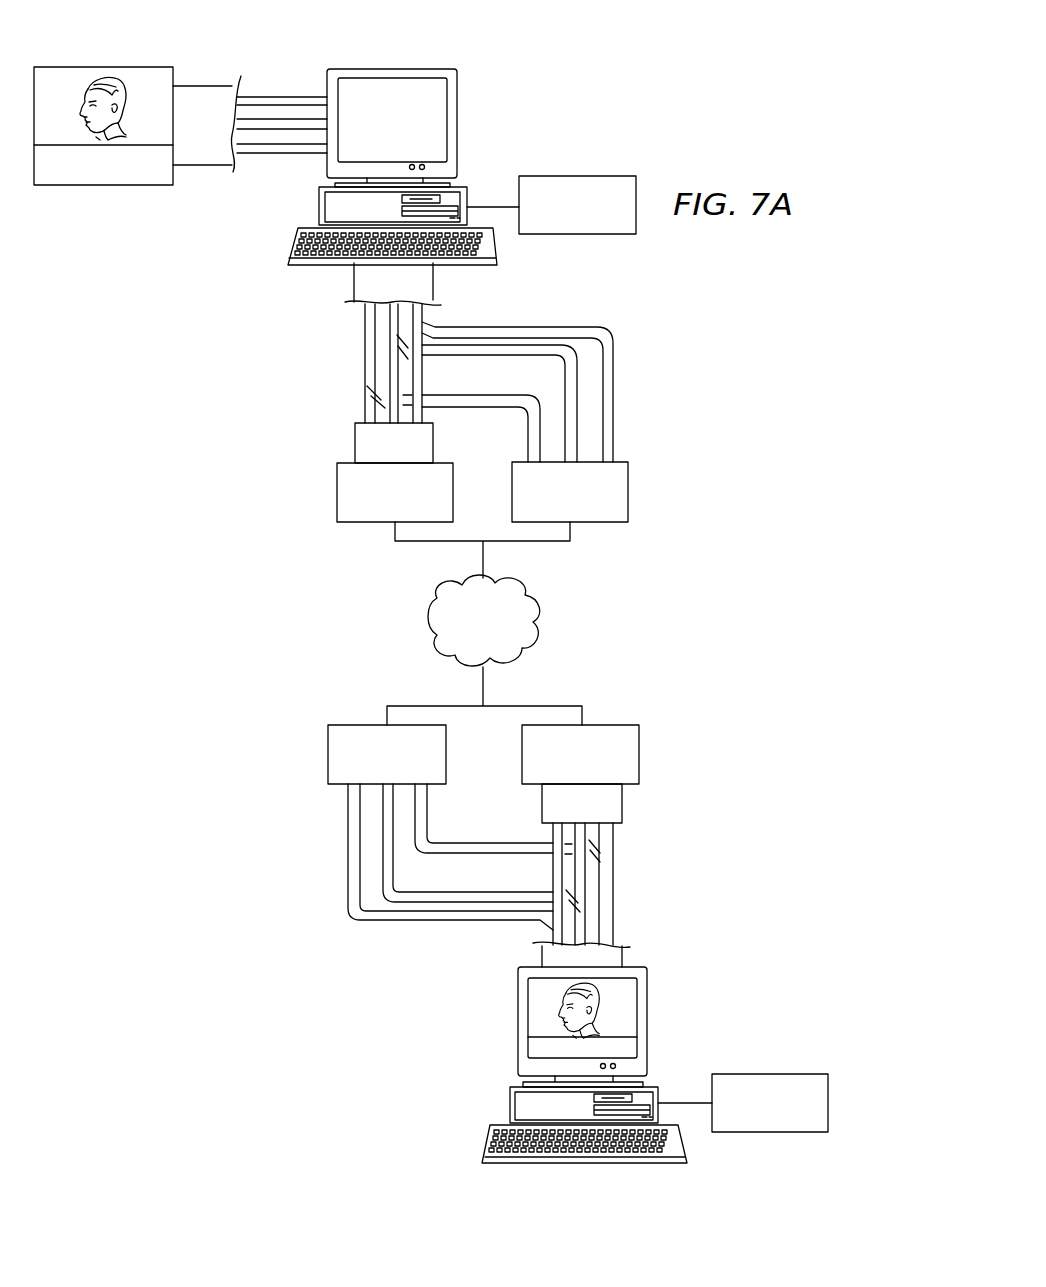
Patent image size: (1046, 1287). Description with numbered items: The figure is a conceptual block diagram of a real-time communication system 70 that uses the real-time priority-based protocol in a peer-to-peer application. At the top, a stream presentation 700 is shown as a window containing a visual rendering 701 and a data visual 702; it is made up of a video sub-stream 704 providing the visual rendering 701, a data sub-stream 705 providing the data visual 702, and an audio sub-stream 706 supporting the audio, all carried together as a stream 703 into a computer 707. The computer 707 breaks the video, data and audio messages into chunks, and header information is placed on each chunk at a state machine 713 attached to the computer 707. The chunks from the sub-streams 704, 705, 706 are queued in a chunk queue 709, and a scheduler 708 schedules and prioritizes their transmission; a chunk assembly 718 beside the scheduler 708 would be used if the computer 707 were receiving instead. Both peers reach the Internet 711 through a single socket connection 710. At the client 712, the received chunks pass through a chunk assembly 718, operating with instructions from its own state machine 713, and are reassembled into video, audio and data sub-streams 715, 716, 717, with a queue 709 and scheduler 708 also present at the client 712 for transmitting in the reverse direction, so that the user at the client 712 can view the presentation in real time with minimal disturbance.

The real-time communication system 70 is at (549, 80).
The stream presentation 700 is at (80, 61).
The visual rendering 701 is at (134, 66).
The data visual 702 is at (104, 187).
The stream 703 is at (210, 168).
The video sub-stream 704 is at (262, 157).
The data sub-stream 705 is at (296, 118).
The audio sub-stream 706 is at (264, 96).
The computer 707 is at (402, 68).
The scheduler 708 is at (337, 491).
The chunk queue 709 is at (355, 446).
The single socket connection 710 is at (483, 566).
The Internet 711 is at (428, 629).
The client 712 is at (510, 1106).
The state machine 713 is at (576, 176).
The video sub-stream 715 is at (427, 809).
The audio sub-stream 716 is at (393, 867).
The data sub-stream 717 is at (348, 846).
The chunk assembly 718 is at (628, 488).